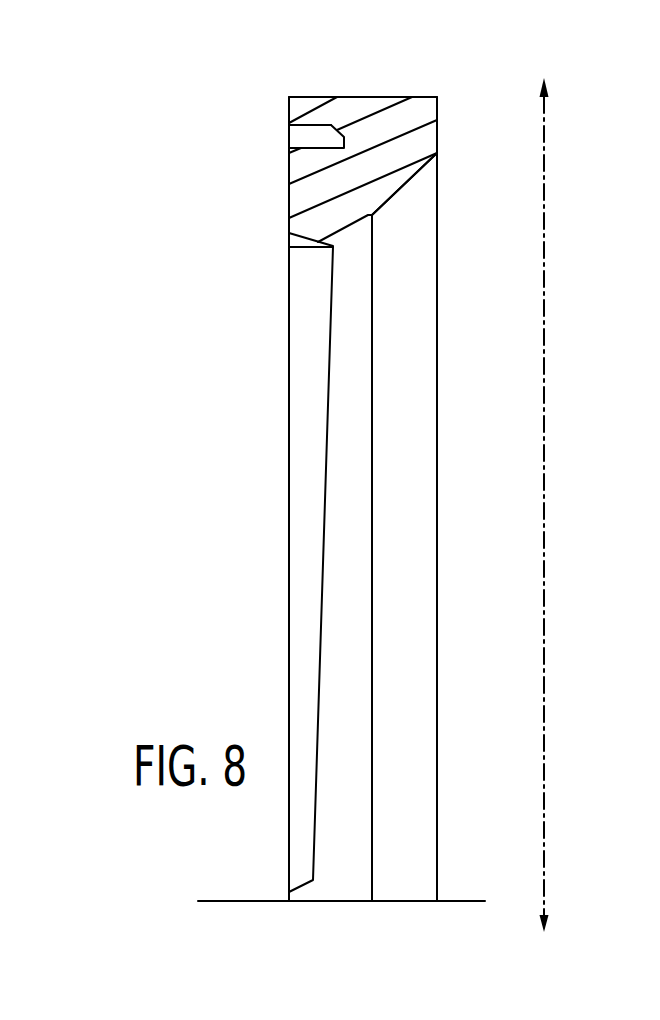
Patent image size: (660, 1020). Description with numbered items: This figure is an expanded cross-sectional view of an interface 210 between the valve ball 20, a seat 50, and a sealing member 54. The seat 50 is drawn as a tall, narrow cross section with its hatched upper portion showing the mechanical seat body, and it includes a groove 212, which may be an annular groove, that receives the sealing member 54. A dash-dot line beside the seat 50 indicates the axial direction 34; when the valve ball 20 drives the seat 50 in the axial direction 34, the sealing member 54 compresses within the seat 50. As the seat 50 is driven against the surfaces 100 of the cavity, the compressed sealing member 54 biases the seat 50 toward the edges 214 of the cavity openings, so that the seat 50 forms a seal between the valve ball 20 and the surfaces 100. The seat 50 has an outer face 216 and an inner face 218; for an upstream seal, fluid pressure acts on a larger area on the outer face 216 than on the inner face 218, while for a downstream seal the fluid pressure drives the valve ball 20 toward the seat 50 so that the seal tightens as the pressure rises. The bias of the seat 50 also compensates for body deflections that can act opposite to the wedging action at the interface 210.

The valve ball 20 is at (413, 228).
The axial direction 34 is at (544, 493).
The seat 50 is at (388, 125).
The sealing member 54 is at (312, 140).
The surfaces 100 is at (289, 197).
The interface 210 is at (464, 166).
The groove 212 is at (270, 137).
The edges 214 is at (268, 241).
The outer face 216 is at (280, 216).
The inner face 218 is at (411, 190).